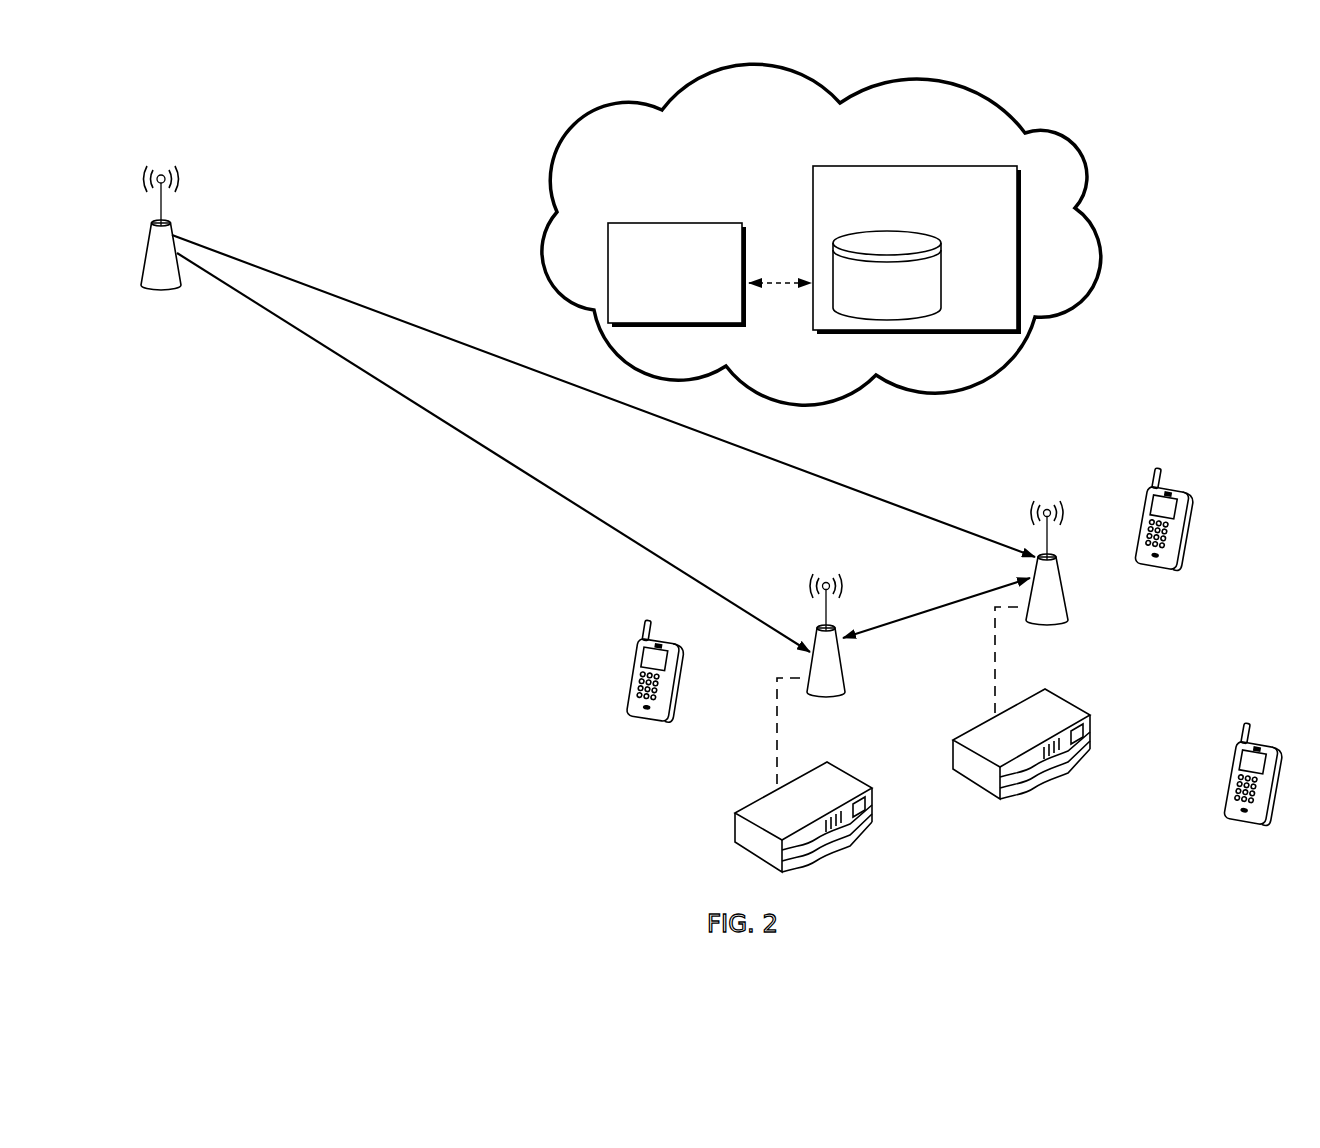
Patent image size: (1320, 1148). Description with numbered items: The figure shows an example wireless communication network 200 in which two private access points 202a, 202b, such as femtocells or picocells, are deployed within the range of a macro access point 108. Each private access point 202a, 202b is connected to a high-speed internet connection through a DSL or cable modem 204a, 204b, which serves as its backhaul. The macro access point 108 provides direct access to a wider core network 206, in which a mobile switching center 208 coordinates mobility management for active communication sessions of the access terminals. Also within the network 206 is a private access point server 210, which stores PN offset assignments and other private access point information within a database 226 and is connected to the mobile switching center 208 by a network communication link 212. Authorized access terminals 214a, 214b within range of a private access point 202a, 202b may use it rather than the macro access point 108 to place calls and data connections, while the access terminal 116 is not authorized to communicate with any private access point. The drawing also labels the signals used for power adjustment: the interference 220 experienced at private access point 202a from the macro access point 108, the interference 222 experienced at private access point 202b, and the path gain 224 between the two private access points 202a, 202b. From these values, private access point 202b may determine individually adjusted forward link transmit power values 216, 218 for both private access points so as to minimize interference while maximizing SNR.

The wireless communication network 200 is at (255, 814).
The macro access point 108 is at (157, 289).
The network 206 is at (821, 234).
The mobile switching center (MSC) 208 is at (677, 275).
The private access point server 210 is at (917, 250).
The database 226 is at (887, 275).
The network communication link 212 is at (766, 287).
The interference I_map-pap1 220 is at (341, 358).
The interference I_map-pap2 222 is at (425, 327).
The forward link transmit power value P_pap1 216 is at (828, 581).
The forward link transmit power value P_pap2 218 is at (1050, 506).
The path gain G_pap1-pap2 224 is at (948, 606).
The private access point 202a is at (846, 696).
The private access point 202b is at (1067, 623).
The cable modem 204a is at (857, 838).
The cable modem 204b is at (1082, 760).
The access terminal 214a is at (636, 712).
The access terminal 214b is at (1174, 572).
The access terminal 116 is at (1246, 823).